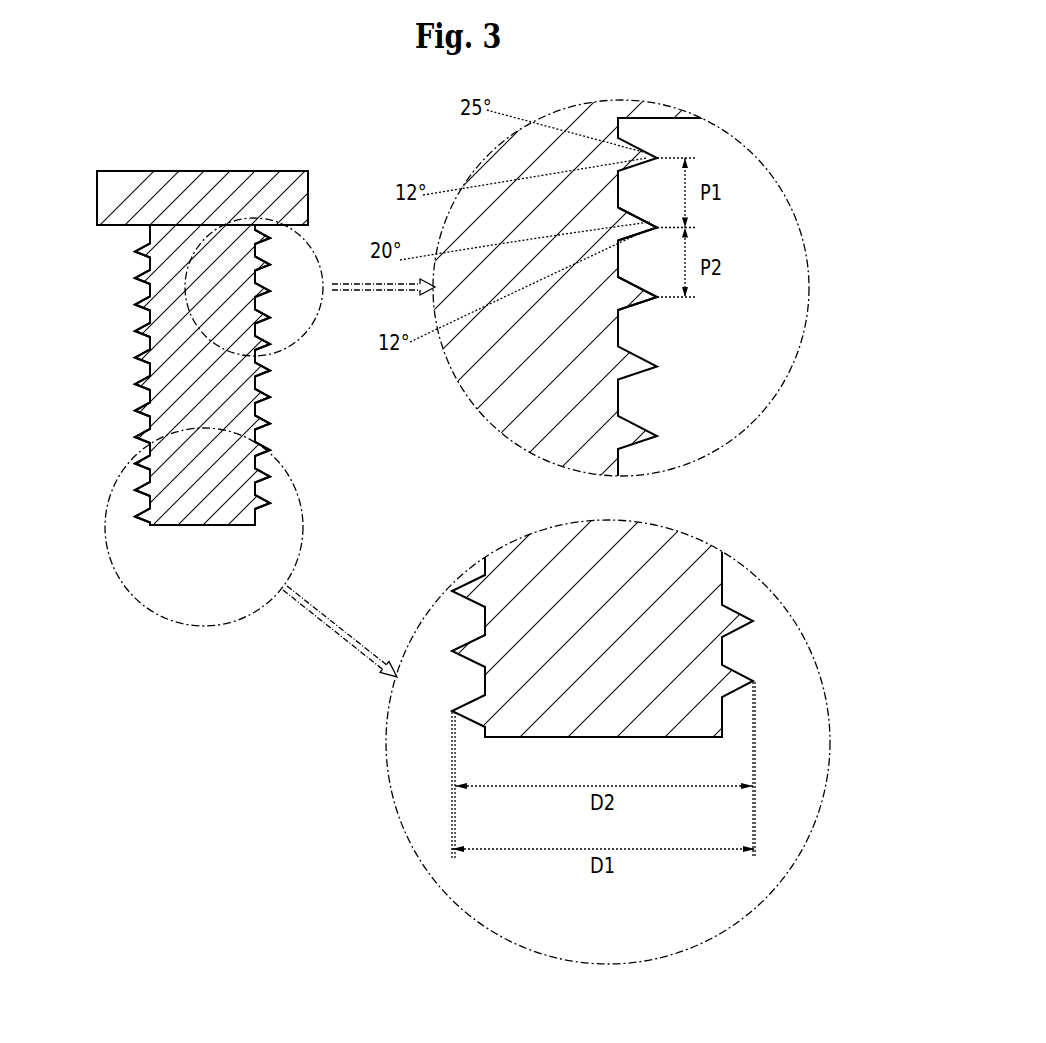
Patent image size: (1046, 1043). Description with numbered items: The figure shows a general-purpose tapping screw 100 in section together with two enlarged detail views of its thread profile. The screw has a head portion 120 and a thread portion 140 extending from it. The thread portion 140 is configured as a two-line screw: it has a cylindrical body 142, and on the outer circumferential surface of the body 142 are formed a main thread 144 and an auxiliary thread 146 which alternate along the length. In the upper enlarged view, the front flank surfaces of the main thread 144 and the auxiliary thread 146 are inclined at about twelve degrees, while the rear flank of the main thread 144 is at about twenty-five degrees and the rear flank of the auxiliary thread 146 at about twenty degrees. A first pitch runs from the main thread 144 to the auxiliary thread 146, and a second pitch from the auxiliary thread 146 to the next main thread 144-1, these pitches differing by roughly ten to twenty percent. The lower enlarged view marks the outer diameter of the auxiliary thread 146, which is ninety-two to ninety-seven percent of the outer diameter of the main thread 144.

The general-purpose tapping screw 100 is at (254, 148).
The head portion 120 is at (190, 192).
The thread portion 140 is at (236, 392).
The body 142 is at (503, 403).
The main thread 144 is at (684, 121).
The next main thread 144-1 is at (659, 299).
The auxiliary thread 146 is at (658, 228).